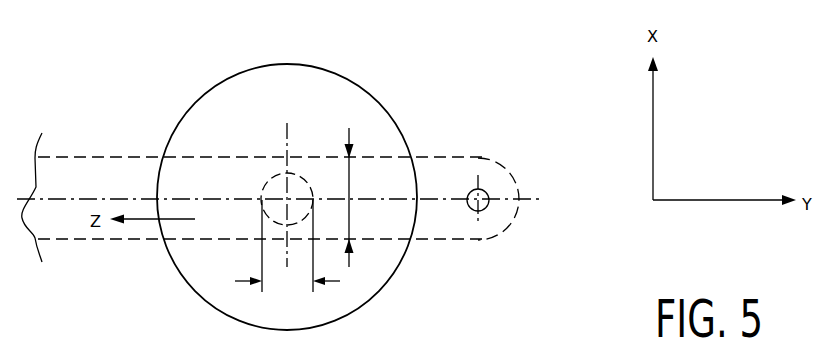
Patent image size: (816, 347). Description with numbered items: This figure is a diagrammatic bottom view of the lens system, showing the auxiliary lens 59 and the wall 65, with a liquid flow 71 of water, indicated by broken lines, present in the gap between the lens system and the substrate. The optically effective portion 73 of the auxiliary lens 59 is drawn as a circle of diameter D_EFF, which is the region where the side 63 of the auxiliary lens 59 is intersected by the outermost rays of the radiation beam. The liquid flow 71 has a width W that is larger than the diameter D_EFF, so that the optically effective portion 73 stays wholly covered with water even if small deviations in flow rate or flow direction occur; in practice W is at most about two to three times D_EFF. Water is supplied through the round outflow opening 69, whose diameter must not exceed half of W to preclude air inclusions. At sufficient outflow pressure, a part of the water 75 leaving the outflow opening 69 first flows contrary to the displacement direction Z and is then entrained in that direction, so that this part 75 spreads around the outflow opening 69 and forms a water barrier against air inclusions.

The wall 65 is at (430, 123).
The liquid flow 71 is at (229, 157).
The optically effective portion 73 is at (283, 173).
The auxiliary lens 59 is at (349, 147).
The side of the auxiliary lens 63 is at (343, 110).
The outflow opening 69 is at (482, 188).
The part of the water 75 is at (495, 236).